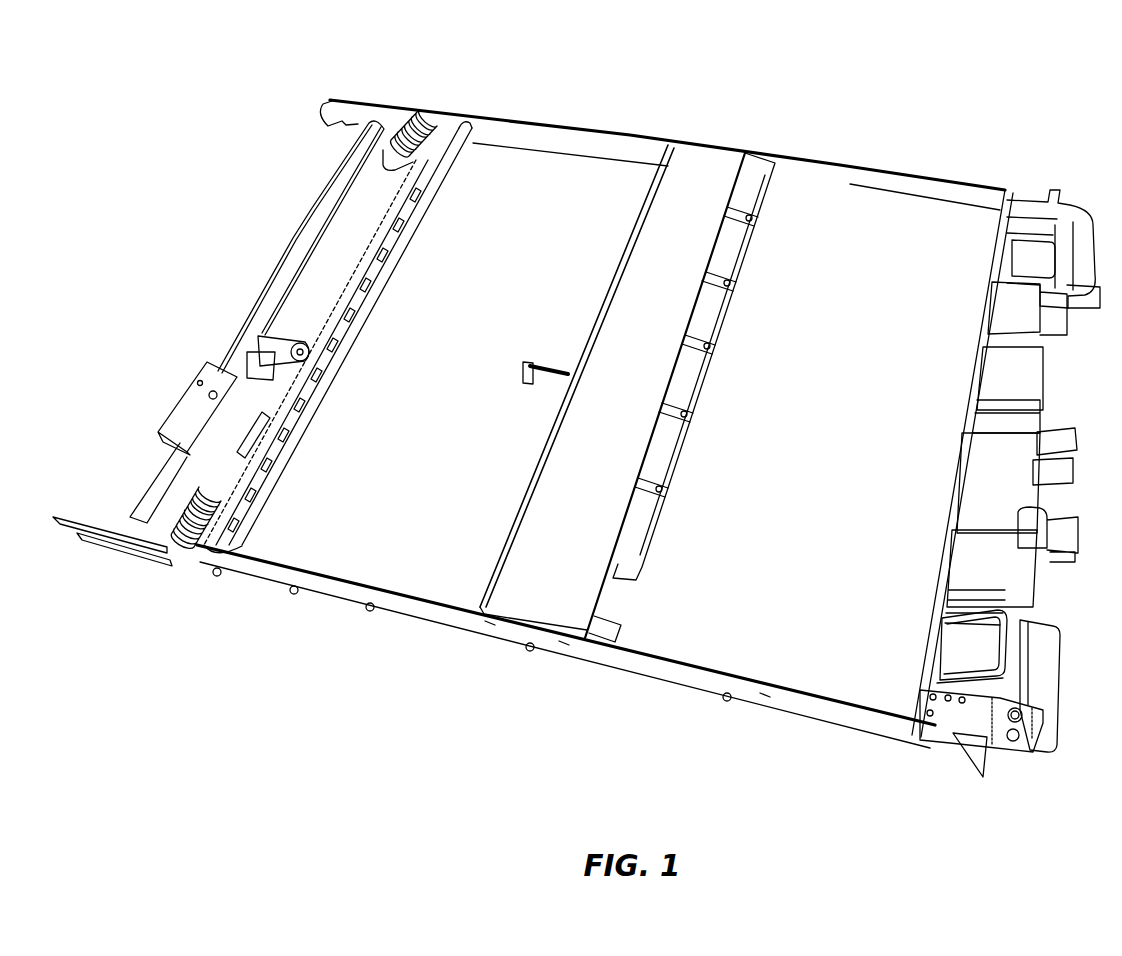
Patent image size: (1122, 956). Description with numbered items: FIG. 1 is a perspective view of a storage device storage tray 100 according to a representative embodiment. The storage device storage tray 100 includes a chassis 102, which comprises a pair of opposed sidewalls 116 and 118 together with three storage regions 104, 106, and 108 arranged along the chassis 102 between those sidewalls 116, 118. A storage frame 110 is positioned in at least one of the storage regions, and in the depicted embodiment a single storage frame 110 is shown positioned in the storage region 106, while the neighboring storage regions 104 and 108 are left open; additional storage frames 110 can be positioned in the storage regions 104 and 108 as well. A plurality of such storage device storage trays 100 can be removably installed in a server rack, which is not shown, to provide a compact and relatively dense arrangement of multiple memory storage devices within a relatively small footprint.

The storage device storage tray 100 is at (780, 108).
The chassis 102 is at (852, 155).
The storage region 104 is at (897, 225).
The storage region 106 is at (620, 615).
The storage region 108 is at (490, 190).
The storage frame 110 is at (550, 585).
The sidewall 116 is at (782, 700).
The sidewall 118 is at (652, 135).